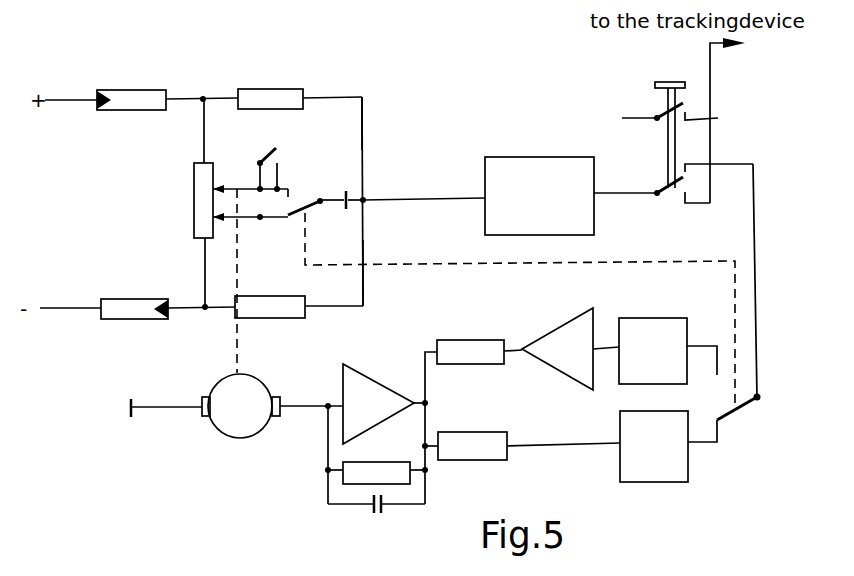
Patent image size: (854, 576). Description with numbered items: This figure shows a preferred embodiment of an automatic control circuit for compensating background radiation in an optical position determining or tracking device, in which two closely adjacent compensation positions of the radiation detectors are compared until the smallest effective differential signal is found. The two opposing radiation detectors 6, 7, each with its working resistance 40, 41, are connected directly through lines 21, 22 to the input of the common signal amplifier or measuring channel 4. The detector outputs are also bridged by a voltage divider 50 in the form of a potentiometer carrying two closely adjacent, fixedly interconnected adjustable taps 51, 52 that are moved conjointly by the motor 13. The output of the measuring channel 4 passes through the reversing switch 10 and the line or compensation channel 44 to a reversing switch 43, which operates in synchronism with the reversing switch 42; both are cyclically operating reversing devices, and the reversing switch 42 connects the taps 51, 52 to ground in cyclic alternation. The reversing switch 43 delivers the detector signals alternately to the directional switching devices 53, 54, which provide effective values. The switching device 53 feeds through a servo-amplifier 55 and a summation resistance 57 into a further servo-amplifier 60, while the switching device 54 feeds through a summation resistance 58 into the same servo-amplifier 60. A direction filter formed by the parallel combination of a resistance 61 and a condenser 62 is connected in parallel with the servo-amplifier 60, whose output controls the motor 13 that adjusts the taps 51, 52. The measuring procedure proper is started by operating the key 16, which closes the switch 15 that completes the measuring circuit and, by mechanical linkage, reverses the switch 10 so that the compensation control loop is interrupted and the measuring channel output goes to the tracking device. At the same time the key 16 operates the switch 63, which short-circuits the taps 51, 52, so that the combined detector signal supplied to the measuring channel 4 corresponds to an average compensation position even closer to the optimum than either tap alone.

The measuring channel 4 is at (532, 157).
The radiation detector 6 is at (133, 90).
The radiation detector 7 is at (126, 299).
The reversing switch 10 is at (665, 190).
The motor 13 is at (222, 435).
The switch 15 is at (660, 115).
The key 16 is at (672, 82).
The line 21 is at (362, 148).
The line 22 is at (363, 245).
The working resistance 40 is at (268, 89).
The working resistance 41 is at (268, 296).
The reversing switch 42 is at (300, 208).
The reversing switch 43 is at (730, 415).
The compensation channel 44 is at (755, 260).
The voltage divider 50 is at (194, 195).
The adjustable tap 51 is at (225, 189).
The adjustable tap 52 is at (230, 228).
The directional switching device 53 is at (649, 318).
The directional switching device 54 is at (648, 482).
The servo-amplifier 55 is at (550, 332).
The summation resistance 57 is at (465, 340).
The summation resistance 58 is at (468, 432).
The servo-amplifier 60 is at (378, 383).
The resistance 61 is at (365, 462).
The condenser 62 is at (372, 513).
The switch 63 is at (270, 158).